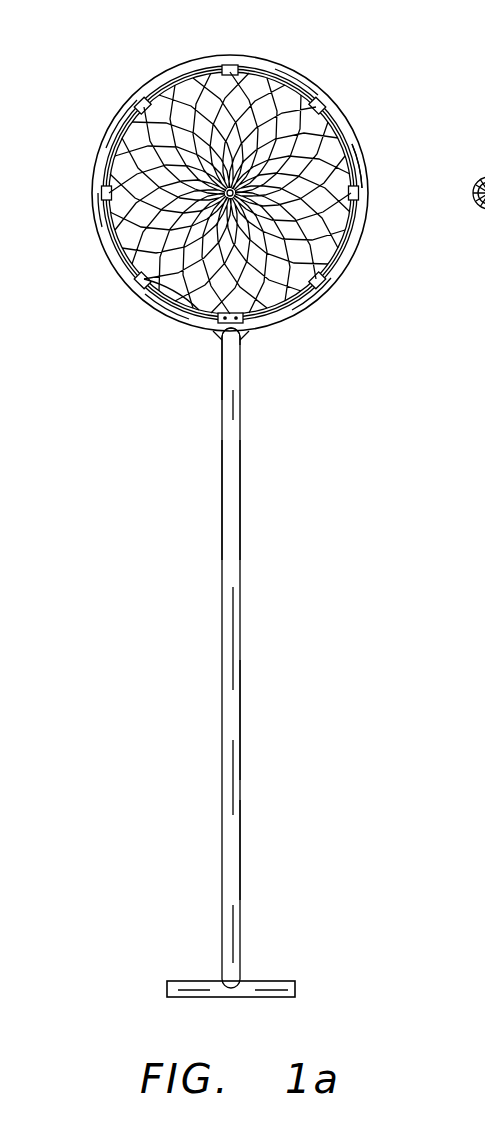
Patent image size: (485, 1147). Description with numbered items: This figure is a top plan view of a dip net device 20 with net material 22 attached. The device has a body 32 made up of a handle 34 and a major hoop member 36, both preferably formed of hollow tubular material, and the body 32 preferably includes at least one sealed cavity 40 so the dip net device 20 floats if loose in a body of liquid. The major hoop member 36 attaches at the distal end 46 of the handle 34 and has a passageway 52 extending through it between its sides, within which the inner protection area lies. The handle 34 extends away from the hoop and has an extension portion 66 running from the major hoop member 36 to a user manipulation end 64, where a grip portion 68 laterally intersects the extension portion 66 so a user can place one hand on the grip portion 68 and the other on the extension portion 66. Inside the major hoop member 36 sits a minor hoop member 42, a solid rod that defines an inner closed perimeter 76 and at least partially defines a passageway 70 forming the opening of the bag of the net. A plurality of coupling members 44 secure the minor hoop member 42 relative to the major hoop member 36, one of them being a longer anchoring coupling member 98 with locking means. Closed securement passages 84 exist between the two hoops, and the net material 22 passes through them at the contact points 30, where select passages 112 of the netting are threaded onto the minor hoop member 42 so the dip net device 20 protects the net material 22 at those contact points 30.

The dip net device 20 is at (340, 300).
The net material 22 is at (322, 137).
The contact points 30 is at (292, 80).
The body 32 is at (240, 582).
The handle 34 is at (222, 490).
The major hoop member 36 is at (362, 245).
The sealed cavity 40 is at (240, 716).
The minor hoop member 42 is at (365, 178).
The coupling members 44 is at (228, 63).
The distal end 46 is at (222, 372).
The passageway 52 is at (137, 137).
The user manipulation end 64 is at (240, 840).
The extension portion 66 is at (240, 508).
The grip portion 68 is at (196, 981).
The passageway 70 is at (160, 312).
The inner closed perimeter 76 is at (362, 158).
The closed securement passages 84 is at (265, 64).
The anchoring coupling member 98 is at (244, 330).
The select passages 112 is at (153, 100).